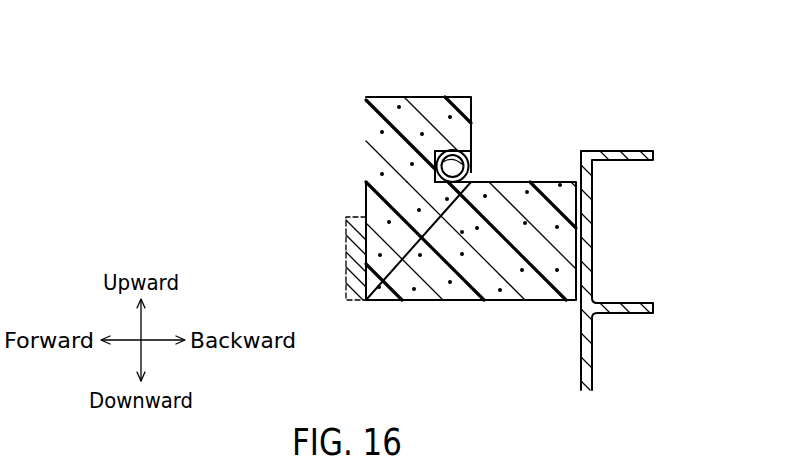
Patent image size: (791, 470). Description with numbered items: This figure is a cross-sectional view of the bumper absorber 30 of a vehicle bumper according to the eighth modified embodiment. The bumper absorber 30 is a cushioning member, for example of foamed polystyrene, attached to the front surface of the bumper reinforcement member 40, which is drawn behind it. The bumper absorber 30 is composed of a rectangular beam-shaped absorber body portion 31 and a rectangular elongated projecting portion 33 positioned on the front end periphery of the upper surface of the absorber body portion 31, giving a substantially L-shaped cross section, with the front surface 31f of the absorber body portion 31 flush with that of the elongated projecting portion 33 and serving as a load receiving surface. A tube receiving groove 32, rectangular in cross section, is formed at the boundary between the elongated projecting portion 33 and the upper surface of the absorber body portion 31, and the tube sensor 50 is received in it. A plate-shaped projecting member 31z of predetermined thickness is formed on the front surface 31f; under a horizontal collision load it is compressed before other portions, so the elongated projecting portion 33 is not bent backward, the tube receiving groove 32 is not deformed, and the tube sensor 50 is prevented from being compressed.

The bumper absorber 30 is at (349, 147).
The absorber body portion 31 is at (512, 263).
The front surface of the absorber body portion 31f is at (366, 204).
The projecting member 31z is at (346, 256).
The tube receiving groove 32 is at (472, 162).
The elongated projecting portion 33 is at (388, 103).
The bumper reinforcement member 40 is at (638, 149).
The tube sensor 50 is at (472, 172).